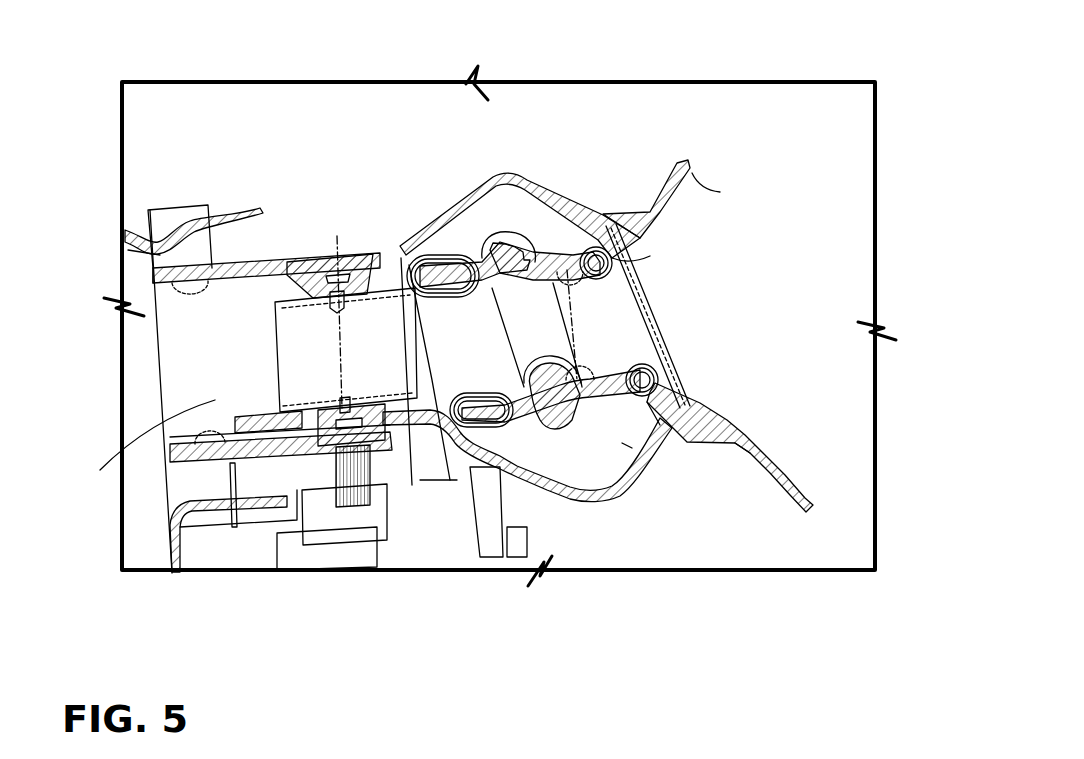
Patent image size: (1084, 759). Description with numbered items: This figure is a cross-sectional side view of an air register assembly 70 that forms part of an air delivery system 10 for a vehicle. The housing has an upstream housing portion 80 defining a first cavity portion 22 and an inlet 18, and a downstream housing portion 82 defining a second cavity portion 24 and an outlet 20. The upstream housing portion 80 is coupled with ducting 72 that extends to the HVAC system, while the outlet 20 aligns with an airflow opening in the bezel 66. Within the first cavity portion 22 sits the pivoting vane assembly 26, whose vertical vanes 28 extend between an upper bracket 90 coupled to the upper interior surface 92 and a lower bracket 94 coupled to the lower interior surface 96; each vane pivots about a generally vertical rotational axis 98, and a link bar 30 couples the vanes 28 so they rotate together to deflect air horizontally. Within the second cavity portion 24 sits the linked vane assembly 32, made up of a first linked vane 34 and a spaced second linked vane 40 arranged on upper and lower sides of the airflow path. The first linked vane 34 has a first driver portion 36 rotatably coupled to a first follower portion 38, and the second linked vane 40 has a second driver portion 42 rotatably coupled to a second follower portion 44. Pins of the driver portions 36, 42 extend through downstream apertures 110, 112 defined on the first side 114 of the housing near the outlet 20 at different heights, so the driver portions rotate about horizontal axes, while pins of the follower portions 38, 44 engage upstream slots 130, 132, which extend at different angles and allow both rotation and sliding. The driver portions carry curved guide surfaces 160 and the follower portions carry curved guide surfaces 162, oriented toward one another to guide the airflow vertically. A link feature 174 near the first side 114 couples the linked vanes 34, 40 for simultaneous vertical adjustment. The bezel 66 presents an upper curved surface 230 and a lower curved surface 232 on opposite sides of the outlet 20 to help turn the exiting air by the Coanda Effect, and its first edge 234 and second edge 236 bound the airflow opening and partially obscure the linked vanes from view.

The air delivery system 10 is at (614, 70).
The inlet 18 is at (160, 385).
The outlet 20 is at (650, 395).
The first cavity portion 22 is at (193, 403).
The second cavity portion 24 is at (590, 470).
The pivoting vane assembly 26 is at (258, 321).
The vanes 28 is at (274, 272).
The link bar 30 is at (330, 412).
The linked vane assembly 32 is at (652, 410).
The first linked vane 34 is at (513, 222).
The first driver portion 36 is at (572, 250).
The first follower portion 38 is at (482, 290).
The second linked vane 40 is at (517, 475).
The second driver portion 42 is at (624, 445).
The second follower portion 44 is at (452, 485).
The bezel 66 is at (692, 173).
The air register assembly 70 is at (420, 180).
The ducting 72 is at (186, 236).
The upstream housing portion 80 is at (240, 270).
The downstream housing portion 82 is at (583, 250).
The upper bracket 90 is at (312, 272).
The upper interior surface 92 is at (157, 283).
The lower bracket 94 is at (340, 436).
The lower interior surface 96 is at (213, 437).
The rotational axis 98 is at (340, 520).
The downstream apertures 110 is at (580, 296).
The downstream apertures 112 is at (648, 418).
The first side 114 is at (603, 345).
The upstream slots 130 is at (445, 252).
The upstream slots 132 is at (410, 480).
The curved guide surfaces 160 is at (582, 243).
The curved guide surfaces 162 is at (390, 277).
The link feature 174 is at (545, 328).
The upper curved surface 230 is at (680, 190).
The lower curved surface 232 is at (723, 412).
The first edge 234 is at (620, 257).
The second edge 236 is at (663, 397).